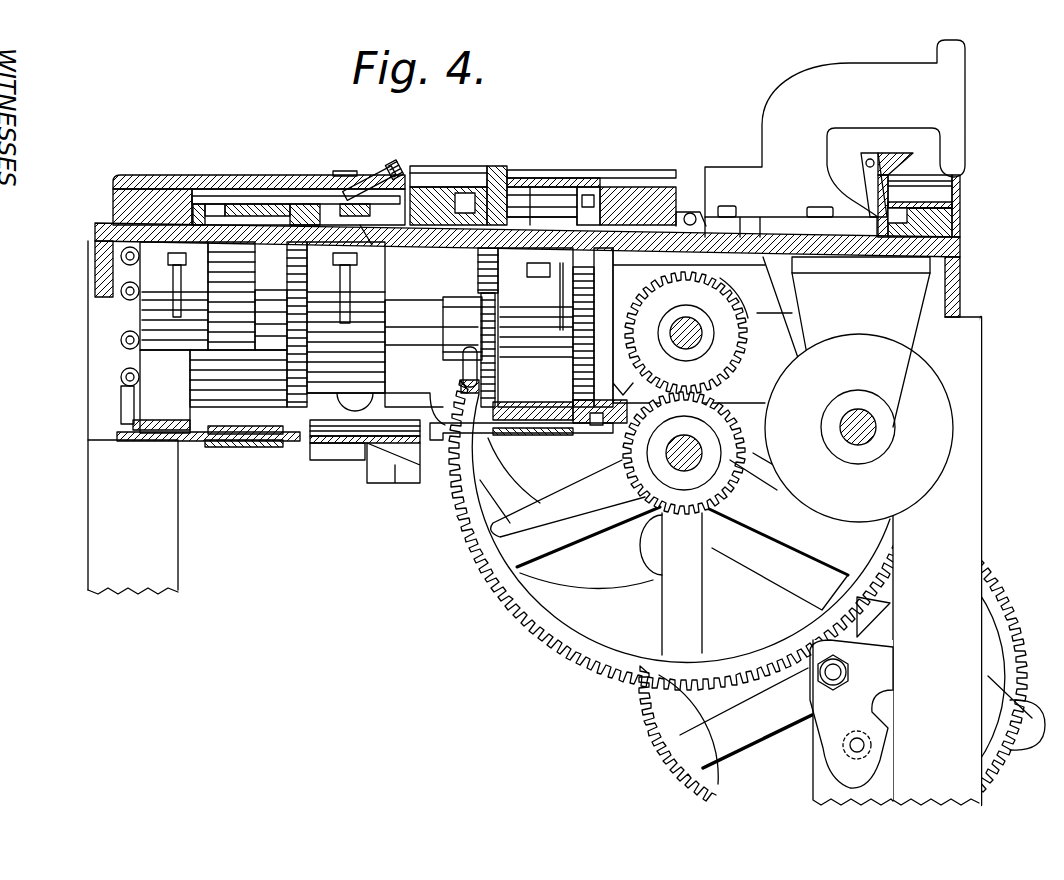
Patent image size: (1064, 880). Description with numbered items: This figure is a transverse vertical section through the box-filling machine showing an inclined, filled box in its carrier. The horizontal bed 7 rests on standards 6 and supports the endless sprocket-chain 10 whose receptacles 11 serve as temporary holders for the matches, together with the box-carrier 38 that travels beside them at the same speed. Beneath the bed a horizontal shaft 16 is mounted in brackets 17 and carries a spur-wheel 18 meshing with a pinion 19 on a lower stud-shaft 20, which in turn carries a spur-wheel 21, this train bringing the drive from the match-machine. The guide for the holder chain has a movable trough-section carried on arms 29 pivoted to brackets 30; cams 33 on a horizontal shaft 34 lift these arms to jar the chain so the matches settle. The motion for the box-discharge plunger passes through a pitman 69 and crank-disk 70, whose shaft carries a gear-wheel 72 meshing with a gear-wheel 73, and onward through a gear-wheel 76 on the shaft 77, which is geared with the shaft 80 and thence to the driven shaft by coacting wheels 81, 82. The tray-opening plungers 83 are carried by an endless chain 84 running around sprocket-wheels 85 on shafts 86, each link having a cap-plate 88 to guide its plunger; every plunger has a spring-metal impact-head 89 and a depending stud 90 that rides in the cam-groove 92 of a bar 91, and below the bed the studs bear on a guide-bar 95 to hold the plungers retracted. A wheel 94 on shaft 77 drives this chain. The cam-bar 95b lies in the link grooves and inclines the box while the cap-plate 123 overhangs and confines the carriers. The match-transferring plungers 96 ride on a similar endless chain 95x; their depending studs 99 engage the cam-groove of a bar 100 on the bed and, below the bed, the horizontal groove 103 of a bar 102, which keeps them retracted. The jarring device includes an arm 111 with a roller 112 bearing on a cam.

The standards 6 is at (133, 517).
The horizontal bed 7 is at (95, 256).
The endless sprocket-chain 10 is at (898, 218).
The receptacles 11 is at (441, 172).
The horizontal shaft 16 is at (702, 467).
The brackets 17 is at (736, 379).
The spur-wheel 18 is at (500, 596).
The pinion 19 is at (797, 702).
The stud-shaft 20 is at (847, 673).
The spur-wheel 21 is at (650, 746).
The arms 29 is at (751, 226).
The brackets 30 is at (694, 212).
The cams 33 is at (915, 491).
The horizontal shaft 34 is at (857, 410).
The box-carrier 38 is at (378, 240).
The pitman 69 is at (461, 382).
The crank-disk 70 is at (490, 307).
The gear-wheel 72 is at (560, 325).
The gear-wheel 73 is at (598, 277).
The gear-wheel 76 is at (478, 281).
The shaft 77 is at (410, 346).
The shaft 80 is at (703, 334).
The coacting wheel 81 is at (734, 299).
The coacting wheel 82 is at (737, 432).
The plungers 83 is at (260, 200).
The endless chain 84 is at (218, 204).
The sprocket-wheels 85 is at (216, 373).
The shafts 86 is at (148, 316).
The cap-plate 88 is at (238, 195).
The angular piece of spring metal 89 is at (346, 176).
The depending stud 90 is at (200, 205).
The bar 91 is at (128, 186).
The cam-groove 92 is at (215, 205).
The wheel 94 is at (307, 377).
The guide-bar 95 is at (121, 345).
The endless chain 95x is at (532, 186).
The cam-bar 95b is at (370, 248).
The reciprocable plungers 96 is at (560, 188).
The depending stud 99 is at (590, 195).
The bar 100 is at (636, 200).
The bar 102 is at (522, 434).
The horizontal groove 103 is at (600, 462).
The arm 111 is at (878, 615).
The roller 112 is at (1000, 754).
The cap-plate 123 is at (113, 202).